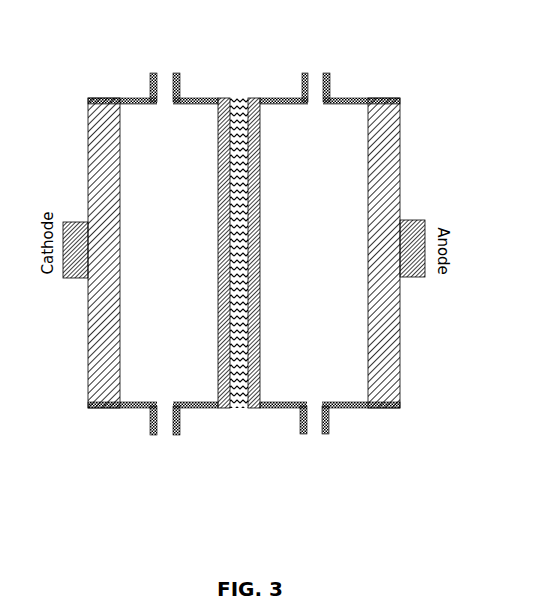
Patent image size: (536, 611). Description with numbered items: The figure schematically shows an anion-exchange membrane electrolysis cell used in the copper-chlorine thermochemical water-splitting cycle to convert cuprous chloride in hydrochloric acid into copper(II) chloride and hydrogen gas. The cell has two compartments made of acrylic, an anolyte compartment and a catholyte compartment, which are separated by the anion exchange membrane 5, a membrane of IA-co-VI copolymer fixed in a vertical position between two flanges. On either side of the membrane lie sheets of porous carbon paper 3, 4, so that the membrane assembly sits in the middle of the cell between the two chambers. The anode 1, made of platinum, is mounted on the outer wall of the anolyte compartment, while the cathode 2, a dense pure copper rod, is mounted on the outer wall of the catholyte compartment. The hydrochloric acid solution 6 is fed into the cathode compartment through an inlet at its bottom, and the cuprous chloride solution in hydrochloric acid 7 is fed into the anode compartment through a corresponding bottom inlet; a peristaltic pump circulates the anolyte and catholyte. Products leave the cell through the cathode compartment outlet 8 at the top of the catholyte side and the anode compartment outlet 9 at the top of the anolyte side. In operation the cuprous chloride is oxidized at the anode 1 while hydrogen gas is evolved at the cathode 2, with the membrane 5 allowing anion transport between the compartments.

The anode 1 is at (388, 406).
The cathode 2 is at (98, 405).
The porous carbon paper 3 is at (220, 223).
The porous carbon paper 4 is at (257, 223).
The anion exchange membrane 5 is at (237, 406).
The hydrochloric acid solution 6 is at (166, 397).
The cuprous chloride solution in hydrochloric acid 7 is at (314, 393).
The cathode compartment outlet 8 is at (166, 102).
The anode compartment outlet 9 is at (315, 104).